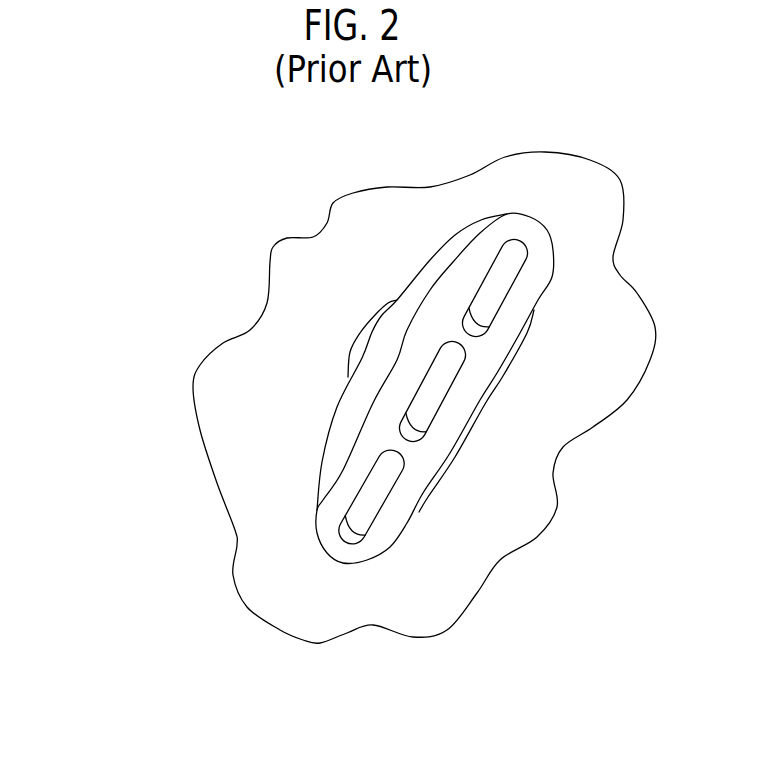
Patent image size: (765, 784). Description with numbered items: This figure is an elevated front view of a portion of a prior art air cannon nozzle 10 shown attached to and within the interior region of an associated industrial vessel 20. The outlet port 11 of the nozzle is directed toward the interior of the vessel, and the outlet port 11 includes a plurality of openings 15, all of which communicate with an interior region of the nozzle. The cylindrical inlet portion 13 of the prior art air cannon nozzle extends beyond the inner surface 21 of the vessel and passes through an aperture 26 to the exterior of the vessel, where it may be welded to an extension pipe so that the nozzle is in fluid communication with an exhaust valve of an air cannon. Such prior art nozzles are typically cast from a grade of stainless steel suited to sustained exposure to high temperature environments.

The prior art air cannon nozzle 10 is at (466, 416).
The outlet port 11 is at (507, 263).
The cylindrical inlet portion 13 is at (380, 323).
The openings 15 is at (363, 513).
The industrial vessel 20 is at (252, 370).
The inner surface 21 is at (300, 303).
The aperture 26 is at (383, 300).